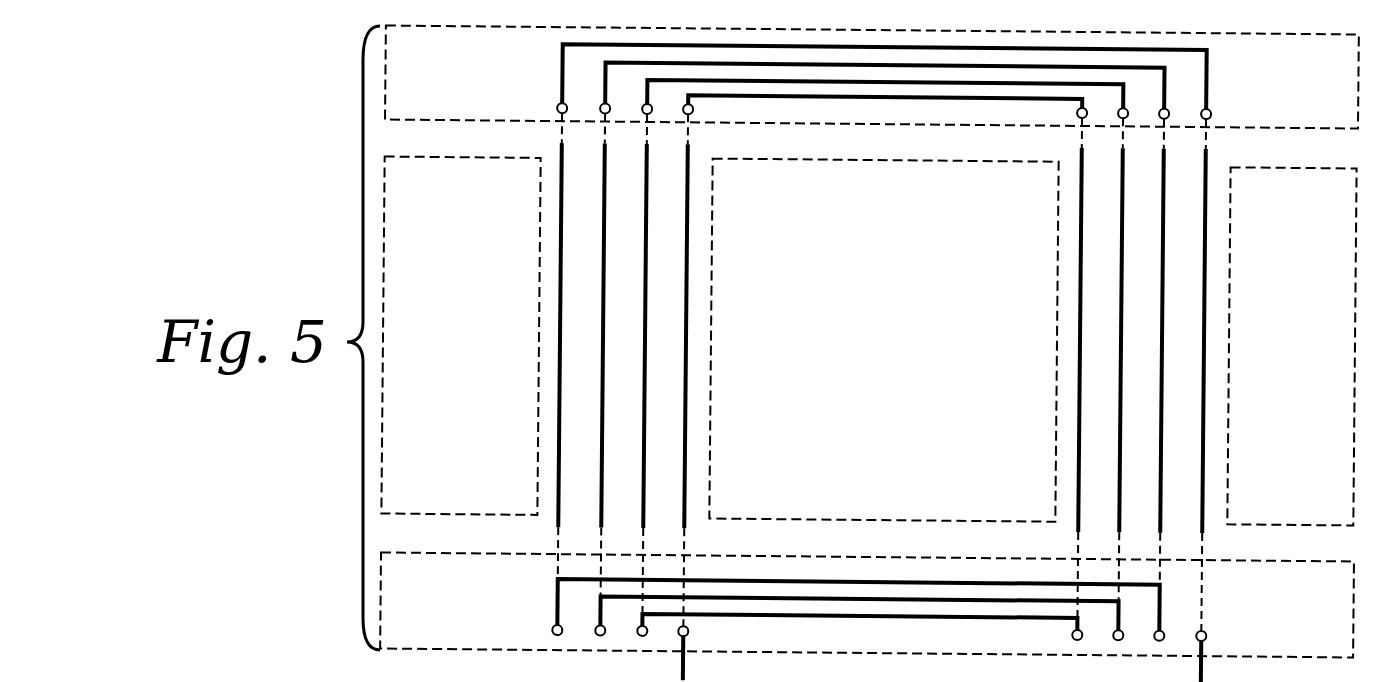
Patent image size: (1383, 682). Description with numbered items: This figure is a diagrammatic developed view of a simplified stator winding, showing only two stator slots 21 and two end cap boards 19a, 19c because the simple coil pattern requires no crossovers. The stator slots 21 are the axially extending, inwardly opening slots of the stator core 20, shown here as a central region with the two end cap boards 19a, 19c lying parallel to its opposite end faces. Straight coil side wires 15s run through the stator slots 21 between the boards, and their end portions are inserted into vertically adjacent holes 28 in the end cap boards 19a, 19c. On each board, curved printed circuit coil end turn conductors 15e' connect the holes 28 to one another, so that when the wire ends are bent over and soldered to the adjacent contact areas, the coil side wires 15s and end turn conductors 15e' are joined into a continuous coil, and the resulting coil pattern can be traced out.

The inner end cap board 19a is at (462, 111).
The end cap board 19c is at (1296, 570).
The stator core 20 is at (818, 173).
The stator slots 21 is at (700, 321).
The coil side wires 15s is at (686, 249).
The printed circuit coil end turn conductors 15e' is at (882, 363).
The holes 28 is at (1209, 112).